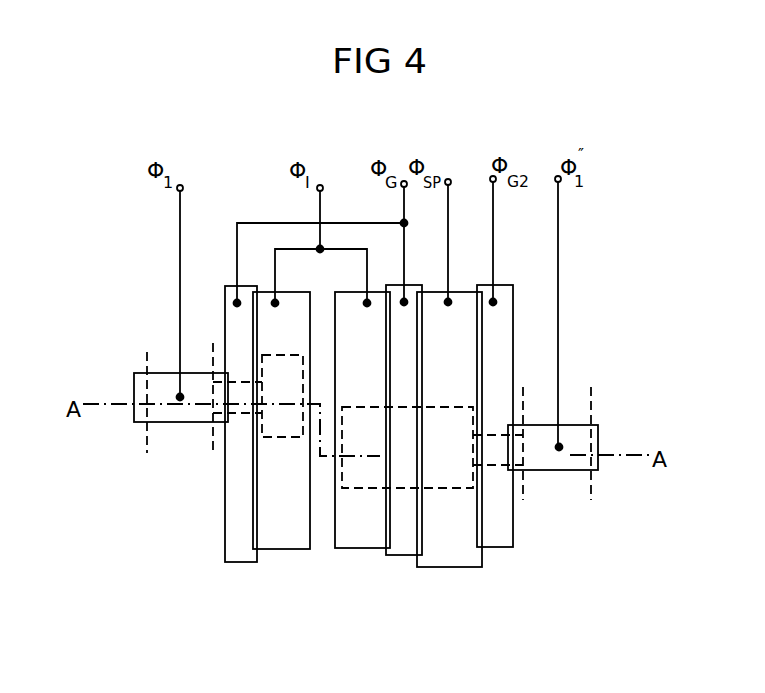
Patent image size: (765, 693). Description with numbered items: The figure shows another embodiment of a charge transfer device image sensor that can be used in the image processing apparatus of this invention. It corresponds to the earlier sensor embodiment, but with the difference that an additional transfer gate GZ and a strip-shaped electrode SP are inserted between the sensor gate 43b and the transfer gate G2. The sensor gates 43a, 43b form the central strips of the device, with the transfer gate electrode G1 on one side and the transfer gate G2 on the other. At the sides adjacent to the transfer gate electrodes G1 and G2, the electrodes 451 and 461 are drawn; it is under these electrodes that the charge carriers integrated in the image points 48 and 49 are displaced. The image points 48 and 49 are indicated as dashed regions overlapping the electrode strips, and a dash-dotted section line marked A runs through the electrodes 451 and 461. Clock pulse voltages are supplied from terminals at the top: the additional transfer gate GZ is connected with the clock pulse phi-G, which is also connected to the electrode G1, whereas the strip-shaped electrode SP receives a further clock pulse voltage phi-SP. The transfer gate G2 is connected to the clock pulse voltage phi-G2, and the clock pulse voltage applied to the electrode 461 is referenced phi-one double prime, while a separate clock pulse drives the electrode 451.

The electrode 451 is at (181, 412).
The image point 48 is at (287, 427).
The image point 49 is at (363, 418).
The electrode 461 is at (577, 437).
The sensor gate 43a is at (283, 538).
The sensor gate 43b is at (360, 538).
The transfer gate electrode G1 is at (225, 317).
The additional transfer gate GZ is at (410, 320).
The strip-shaped electrode SP is at (457, 320).
The transfer gate G2 is at (498, 320).